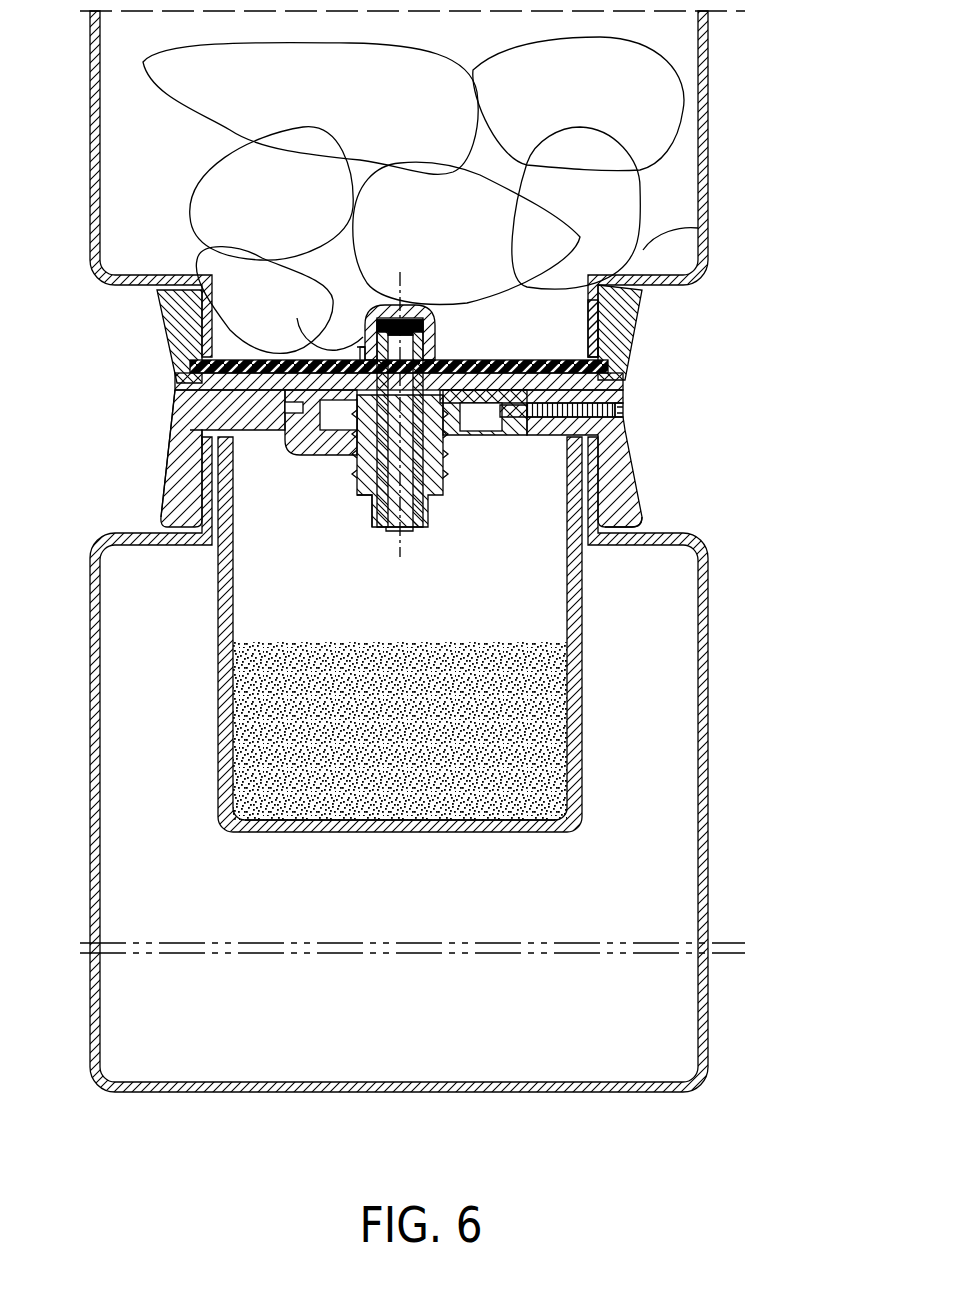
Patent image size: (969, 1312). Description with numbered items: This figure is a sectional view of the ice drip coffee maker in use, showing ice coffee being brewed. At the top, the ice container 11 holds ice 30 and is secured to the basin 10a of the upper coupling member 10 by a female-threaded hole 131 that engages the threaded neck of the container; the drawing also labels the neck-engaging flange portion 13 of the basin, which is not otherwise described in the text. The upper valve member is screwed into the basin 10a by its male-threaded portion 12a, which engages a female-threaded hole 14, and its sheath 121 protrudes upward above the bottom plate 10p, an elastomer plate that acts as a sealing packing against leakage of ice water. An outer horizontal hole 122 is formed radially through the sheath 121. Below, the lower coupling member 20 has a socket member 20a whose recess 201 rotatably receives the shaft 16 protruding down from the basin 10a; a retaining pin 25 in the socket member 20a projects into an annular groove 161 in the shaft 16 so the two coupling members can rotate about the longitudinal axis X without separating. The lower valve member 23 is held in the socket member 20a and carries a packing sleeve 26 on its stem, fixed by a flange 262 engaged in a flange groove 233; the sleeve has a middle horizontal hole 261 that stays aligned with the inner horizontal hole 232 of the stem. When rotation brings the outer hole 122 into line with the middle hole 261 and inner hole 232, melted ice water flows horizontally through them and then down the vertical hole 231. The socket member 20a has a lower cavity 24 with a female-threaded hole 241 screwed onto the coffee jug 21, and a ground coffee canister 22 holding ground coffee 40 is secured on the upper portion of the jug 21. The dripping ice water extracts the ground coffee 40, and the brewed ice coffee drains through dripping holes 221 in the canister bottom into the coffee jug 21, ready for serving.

The upper coupling member 10 is at (698, 328).
The basin 10a is at (641, 310).
The bottom plate 10p is at (198, 357).
The ice container 11 is at (709, 118).
The male-threaded portion 12a is at (625, 376).
The sheath 121 is at (363, 335).
The outer horizontal hole 122 is at (430, 346).
The engaging flange 13 is at (160, 312).
The female-threaded hole 131 is at (588, 330).
The female-threaded hole 14 is at (620, 410).
The shaft 16 is at (545, 495).
The annular groove 161 is at (505, 420).
The lower coupling member 20 is at (405, 458).
The socket member 20a is at (170, 492).
The recess 201 is at (340, 432).
The coffee jug 21 is at (709, 633).
The ground coffee canister 22 is at (355, 667).
The dripping holes 221 is at (292, 833).
The lower valve member 23 is at (371, 459).
The vertical hole 231 is at (386, 528).
The inner horizontal hole 232 is at (318, 347).
The flange groove 233 is at (360, 440).
The lower cavity 24 is at (590, 503).
The female-threaded hole 241 is at (193, 443).
The retaining pin 25 is at (513, 418).
The packing sleeve 26 is at (430, 371).
The middle horizontal hole 261 is at (412, 340).
The flange 262 is at (350, 402).
The ice 30 is at (640, 213).
The ground coffee 40 is at (275, 762).
The longitudinal axis X is at (415, 531).